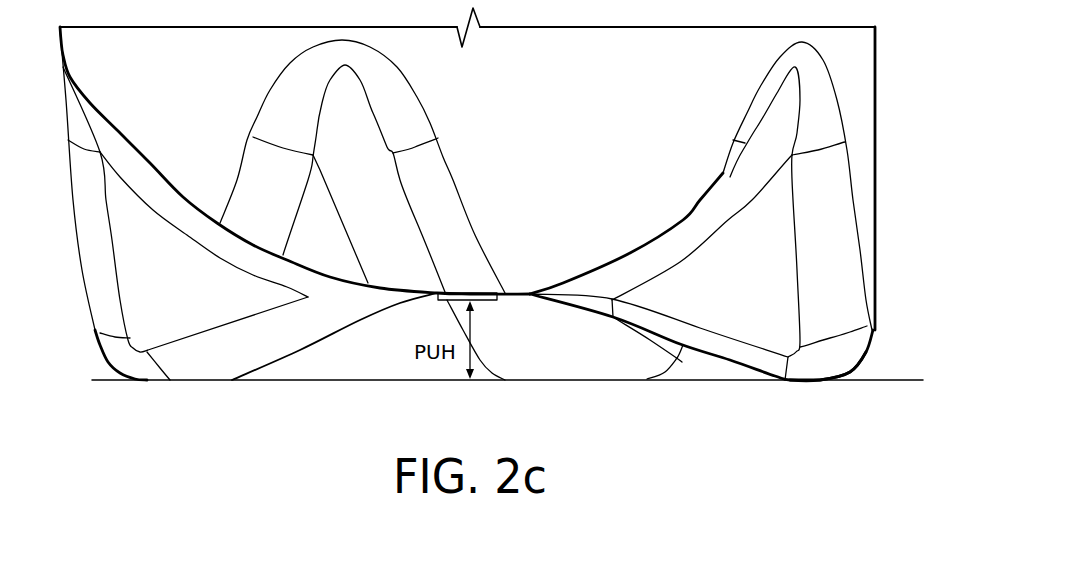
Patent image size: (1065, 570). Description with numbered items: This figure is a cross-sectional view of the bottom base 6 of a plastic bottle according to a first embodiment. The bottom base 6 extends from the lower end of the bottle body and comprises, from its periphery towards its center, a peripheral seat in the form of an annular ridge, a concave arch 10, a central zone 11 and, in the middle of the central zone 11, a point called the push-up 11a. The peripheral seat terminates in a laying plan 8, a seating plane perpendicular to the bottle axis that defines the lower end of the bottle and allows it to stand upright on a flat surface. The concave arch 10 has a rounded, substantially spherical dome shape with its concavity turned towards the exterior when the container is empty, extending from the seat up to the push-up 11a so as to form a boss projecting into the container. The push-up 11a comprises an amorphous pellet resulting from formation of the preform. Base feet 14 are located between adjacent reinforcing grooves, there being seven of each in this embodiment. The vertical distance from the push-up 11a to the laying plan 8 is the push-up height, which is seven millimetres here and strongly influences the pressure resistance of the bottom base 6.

The bottom base 6 is at (877, 118).
The laying plan 8 is at (880, 383).
The concave arch 10 is at (312, 345).
The central zone 11 is at (520, 296).
The push-up 11a is at (477, 297).
The base feet 14 is at (118, 357).